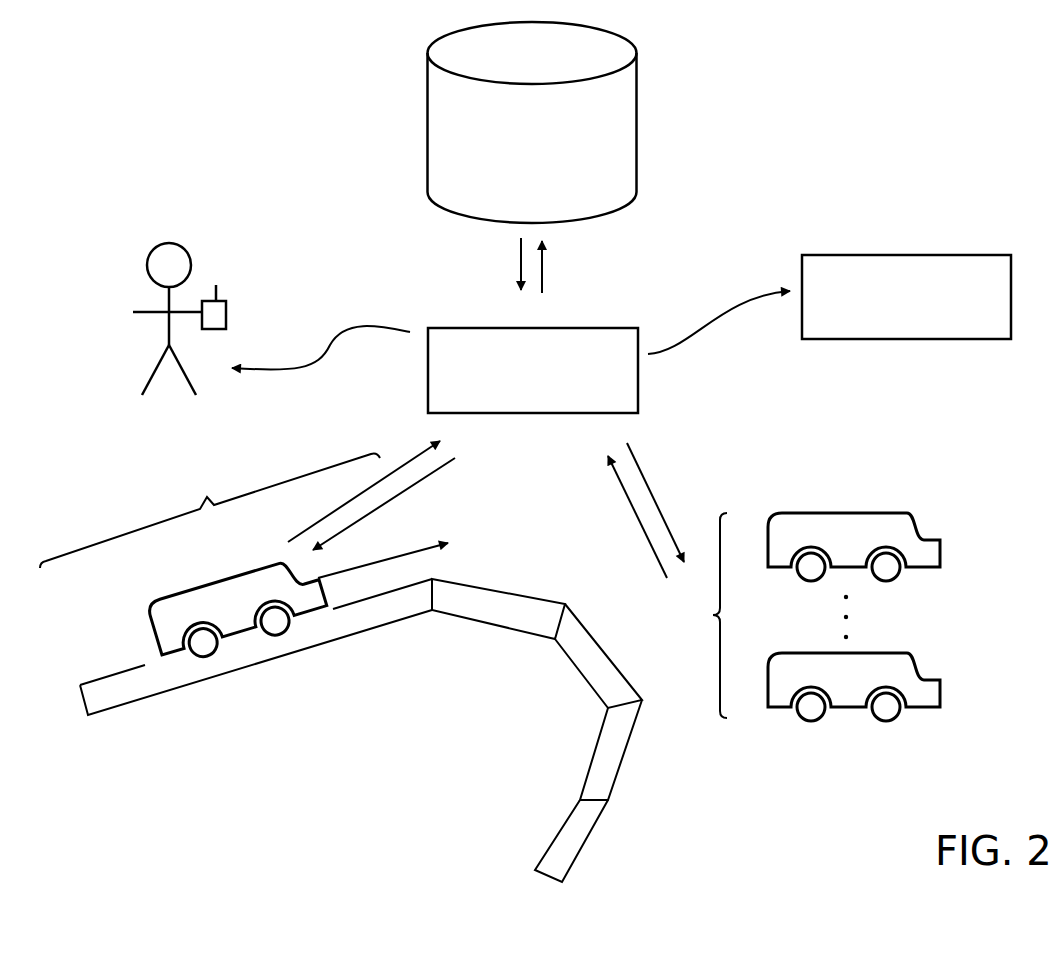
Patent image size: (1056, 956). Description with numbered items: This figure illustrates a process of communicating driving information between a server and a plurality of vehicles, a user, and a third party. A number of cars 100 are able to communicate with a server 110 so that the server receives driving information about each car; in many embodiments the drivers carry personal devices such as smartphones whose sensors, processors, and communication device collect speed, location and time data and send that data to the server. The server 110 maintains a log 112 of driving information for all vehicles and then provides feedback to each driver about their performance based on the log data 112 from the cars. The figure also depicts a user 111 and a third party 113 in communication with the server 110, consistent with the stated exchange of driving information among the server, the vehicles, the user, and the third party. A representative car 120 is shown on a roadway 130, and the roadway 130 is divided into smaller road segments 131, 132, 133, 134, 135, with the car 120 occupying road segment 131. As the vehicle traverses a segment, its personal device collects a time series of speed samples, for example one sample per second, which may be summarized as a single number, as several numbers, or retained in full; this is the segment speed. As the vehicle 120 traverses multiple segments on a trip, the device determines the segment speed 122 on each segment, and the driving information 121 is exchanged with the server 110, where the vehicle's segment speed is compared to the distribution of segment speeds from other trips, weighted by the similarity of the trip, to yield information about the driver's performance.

The cars 100 is at (845, 724).
The server 110 is at (513, 384).
The user 111 is at (168, 410).
The log 112 is at (502, 159).
The external system 113 is at (888, 310).
The car 120 is at (206, 615).
The vehicle data transmission 121 is at (410, 551).
The segment speed 122 is at (210, 511).
The roadway 130 is at (361, 730).
The road segment 131 is at (157, 693).
The road segment 132 is at (490, 600).
The road segment 133 is at (588, 660).
The road segment 134 is at (605, 759).
The road segment 135 is at (570, 834).